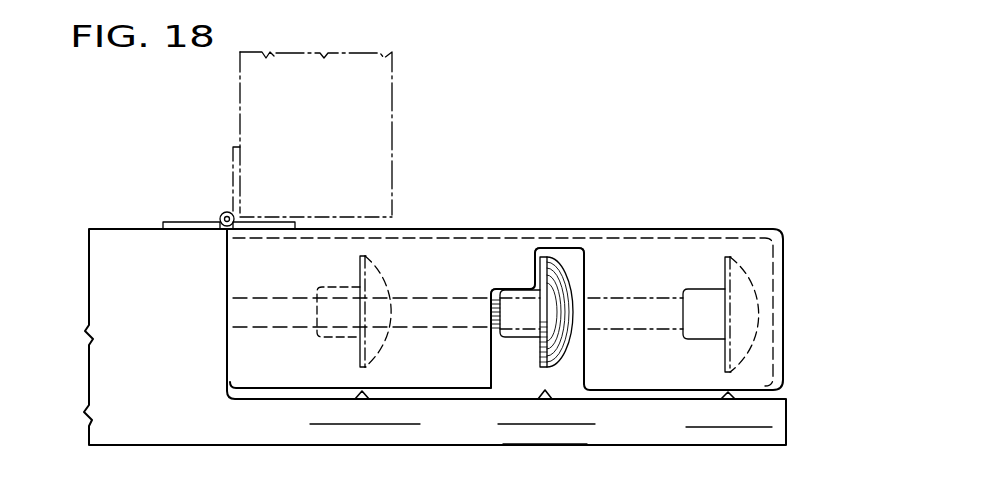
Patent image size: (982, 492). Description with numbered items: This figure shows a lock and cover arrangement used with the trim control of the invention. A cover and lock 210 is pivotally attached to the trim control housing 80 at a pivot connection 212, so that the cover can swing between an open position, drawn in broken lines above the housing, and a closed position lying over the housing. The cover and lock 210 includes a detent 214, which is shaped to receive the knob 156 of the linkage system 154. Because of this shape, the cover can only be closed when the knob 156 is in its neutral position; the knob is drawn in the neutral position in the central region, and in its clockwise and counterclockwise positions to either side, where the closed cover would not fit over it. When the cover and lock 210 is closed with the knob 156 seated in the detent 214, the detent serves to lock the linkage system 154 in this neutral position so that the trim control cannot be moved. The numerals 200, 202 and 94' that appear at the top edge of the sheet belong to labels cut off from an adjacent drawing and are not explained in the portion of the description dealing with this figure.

The trim control housing 80 is at (107, 237).
The pivot connection 212 is at (221, 212).
The cover and lock 210 is at (375, 97).
The linkage system 154 is at (492, 310).
The detent 214 is at (553, 252).
The knob 156 is at (553, 278).
The element 200 is at (292, 6).
The element 202 is at (369, 6).
The element 94 prime 94' is at (410, 16).